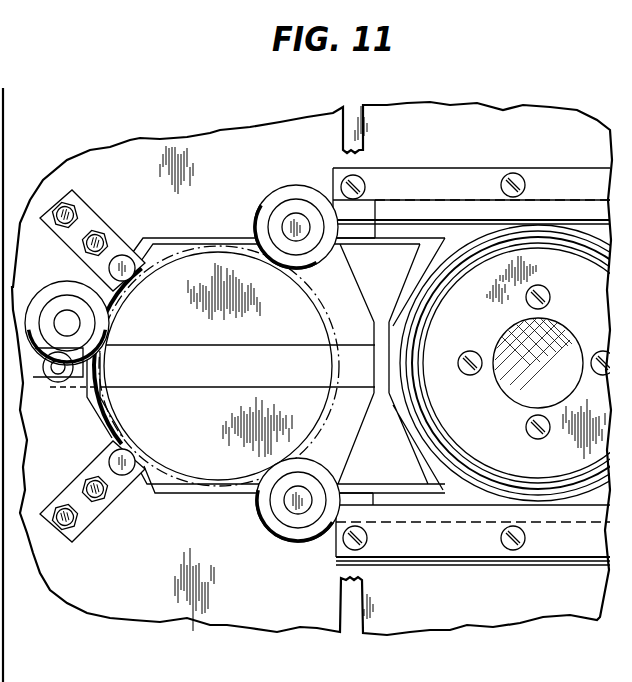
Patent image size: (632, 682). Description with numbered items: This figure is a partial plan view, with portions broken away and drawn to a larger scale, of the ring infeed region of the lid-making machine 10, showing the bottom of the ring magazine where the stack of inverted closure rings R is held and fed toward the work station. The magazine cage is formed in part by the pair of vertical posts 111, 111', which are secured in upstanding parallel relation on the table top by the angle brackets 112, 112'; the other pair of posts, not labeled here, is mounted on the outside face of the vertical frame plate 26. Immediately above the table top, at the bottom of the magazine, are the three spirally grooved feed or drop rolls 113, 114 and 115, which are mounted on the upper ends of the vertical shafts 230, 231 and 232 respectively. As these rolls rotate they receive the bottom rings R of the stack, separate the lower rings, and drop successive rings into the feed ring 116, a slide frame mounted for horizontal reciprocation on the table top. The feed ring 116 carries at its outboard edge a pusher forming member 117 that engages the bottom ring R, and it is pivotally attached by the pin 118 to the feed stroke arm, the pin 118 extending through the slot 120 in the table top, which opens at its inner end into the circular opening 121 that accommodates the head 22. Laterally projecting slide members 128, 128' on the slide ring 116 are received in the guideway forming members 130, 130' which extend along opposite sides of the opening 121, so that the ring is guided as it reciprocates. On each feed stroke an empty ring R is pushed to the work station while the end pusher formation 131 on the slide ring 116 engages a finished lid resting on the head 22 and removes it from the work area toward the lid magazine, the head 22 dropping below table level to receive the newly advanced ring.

The mounting housing 10 is at (9, 159).
The head 22 is at (516, 388).
The vertical frame plate 26 is at (347, 608).
The vertical post 111 is at (131, 484).
The vertical post 111' is at (136, 244).
The angle bracket 112 is at (92, 499).
The angle bracket 112' is at (92, 227).
The feed roll 113 is at (95, 308).
The feed roll 114 is at (277, 512).
The feed roll 115 is at (279, 207).
The feed ring 116 is at (198, 487).
The pusher forming member 117 is at (103, 417).
The pin 118 is at (63, 372).
The slot 120 is at (178, 384).
The circular opening 121 is at (472, 480).
The slide member 128 is at (333, 533).
The slide member 128' is at (374, 190).
The guideway forming member 130 is at (473, 545).
The guideway forming member 130' is at (471, 183).
The end pusher formation 131 is at (410, 350).
The vertical shaft 230 is at (75, 322).
The vertical shaft 231 is at (297, 507).
The vertical shaft 232 is at (293, 220).
The ring R is at (222, 240).